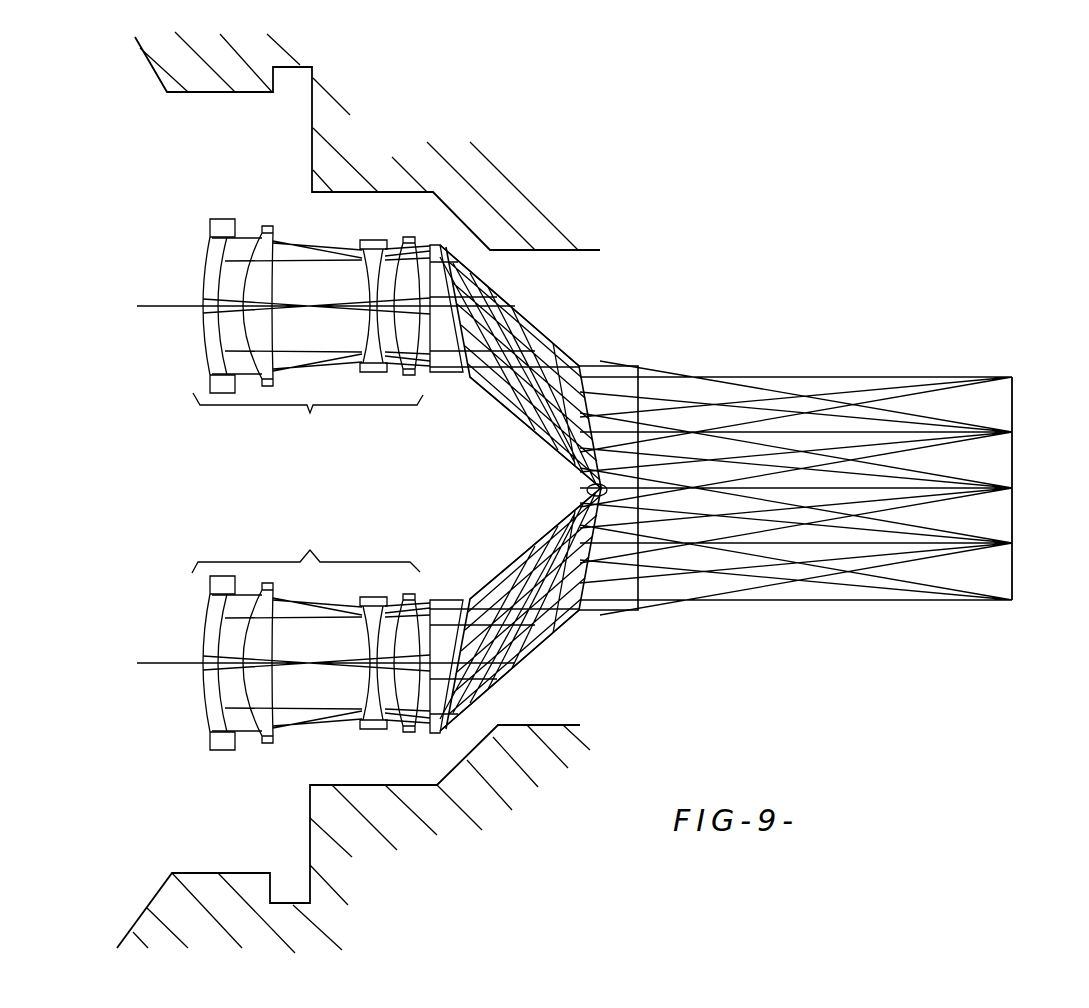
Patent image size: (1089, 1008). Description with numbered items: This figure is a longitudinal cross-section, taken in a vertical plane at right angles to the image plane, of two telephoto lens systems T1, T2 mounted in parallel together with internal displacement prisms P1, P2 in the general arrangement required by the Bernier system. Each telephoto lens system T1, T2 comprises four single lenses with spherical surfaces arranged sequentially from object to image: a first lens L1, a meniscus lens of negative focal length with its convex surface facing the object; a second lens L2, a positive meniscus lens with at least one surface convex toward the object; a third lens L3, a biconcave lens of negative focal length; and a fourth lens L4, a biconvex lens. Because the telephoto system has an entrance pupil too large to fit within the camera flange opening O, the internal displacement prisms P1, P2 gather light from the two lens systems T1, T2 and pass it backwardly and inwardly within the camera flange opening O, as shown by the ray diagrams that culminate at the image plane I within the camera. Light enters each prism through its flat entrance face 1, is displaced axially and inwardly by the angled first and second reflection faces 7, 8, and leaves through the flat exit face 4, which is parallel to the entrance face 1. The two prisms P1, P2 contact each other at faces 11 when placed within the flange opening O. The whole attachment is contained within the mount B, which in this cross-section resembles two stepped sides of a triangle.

The mount B is at (312, 125).
The camera flange opening O is at (557, 725).
The first lens L1 is at (229, 219).
The second lens L2 is at (275, 222).
The third lens L3 is at (374, 240).
The fourth lens L4 is at (409, 237).
The telephoto lens system T1 is at (308, 419).
The telephoto lens system T2 is at (306, 545).
The entrance face 1 is at (430, 344).
The internal displacement prism P1 is at (523, 318).
The internal displacement prism P2 is at (500, 677).
The first reflection face 7 is at (497, 296).
The second reflection face 8 is at (537, 432).
The contact faces 11 is at (588, 489).
The exit face 4 is at (639, 420).
The image plane I is at (1015, 587).